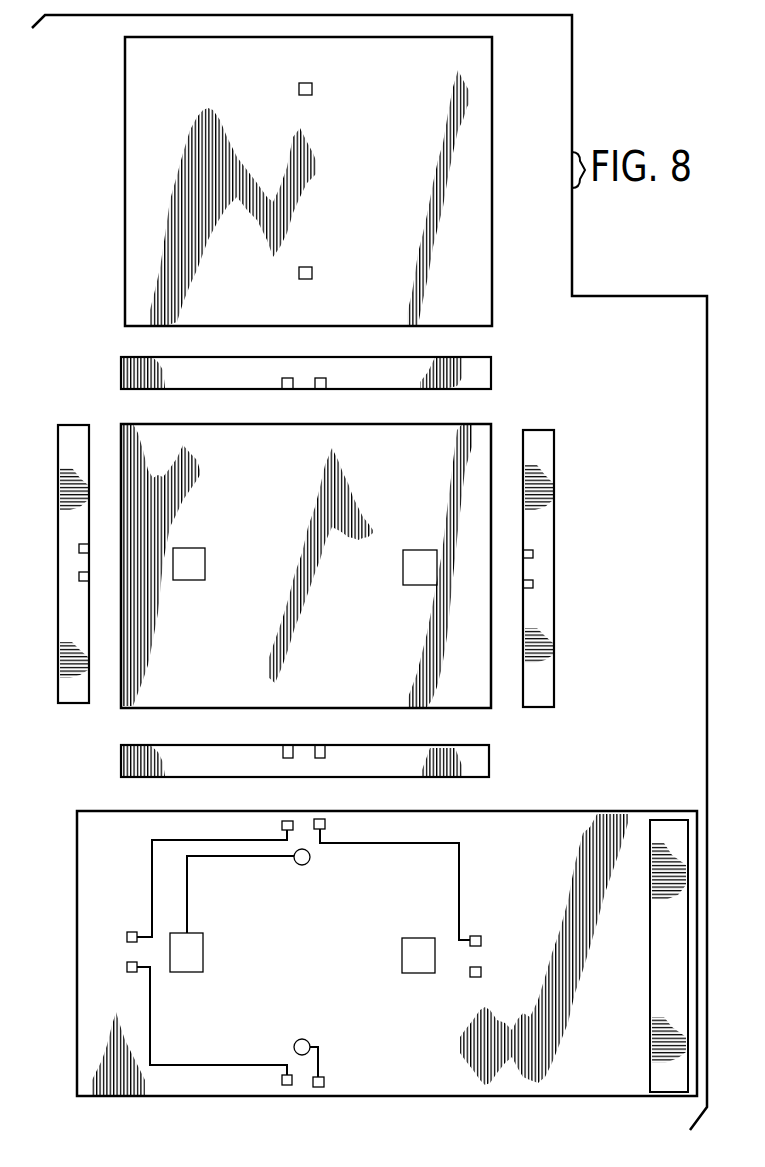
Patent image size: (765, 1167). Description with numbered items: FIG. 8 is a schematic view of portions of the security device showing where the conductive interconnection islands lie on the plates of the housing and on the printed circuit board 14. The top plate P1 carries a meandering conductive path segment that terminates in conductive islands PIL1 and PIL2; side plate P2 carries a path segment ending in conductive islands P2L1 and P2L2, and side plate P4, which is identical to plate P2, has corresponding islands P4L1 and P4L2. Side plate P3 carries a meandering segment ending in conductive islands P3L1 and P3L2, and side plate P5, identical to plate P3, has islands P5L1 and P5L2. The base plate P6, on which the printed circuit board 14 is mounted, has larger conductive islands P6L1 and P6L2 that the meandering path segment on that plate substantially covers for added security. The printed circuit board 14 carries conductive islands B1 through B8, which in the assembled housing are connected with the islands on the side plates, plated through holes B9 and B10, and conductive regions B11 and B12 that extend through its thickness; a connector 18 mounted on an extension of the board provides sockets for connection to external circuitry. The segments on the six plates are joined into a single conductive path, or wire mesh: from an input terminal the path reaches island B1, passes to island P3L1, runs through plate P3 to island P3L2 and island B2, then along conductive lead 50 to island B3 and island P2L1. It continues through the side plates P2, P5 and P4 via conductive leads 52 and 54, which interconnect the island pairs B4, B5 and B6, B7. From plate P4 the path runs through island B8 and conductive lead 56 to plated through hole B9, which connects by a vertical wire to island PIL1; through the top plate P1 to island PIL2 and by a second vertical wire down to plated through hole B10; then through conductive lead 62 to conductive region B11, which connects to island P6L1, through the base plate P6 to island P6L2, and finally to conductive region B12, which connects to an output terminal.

The top plate P1 is at (473, 168).
The conductive island PIL1 is at (313, 89).
The conductive island PIL2 is at (313, 272).
The side plate P2 is at (480, 375).
The conductive island P2L1 is at (321, 389).
The conductive island P2L2 is at (283, 389).
The side plate P3 is at (545, 455).
The conductive island P3L1 is at (535, 583).
The conductive island P3L2 is at (535, 555).
The side plate P4 is at (468, 762).
The conductive island P4L1 is at (283, 748).
The conductive island P4L2 is at (325, 748).
The side plate P5 is at (72, 451).
The conductive island P5L1 is at (78, 548).
The conductive island P5L2 is at (78, 578).
The base plate P6 is at (472, 697).
The conductive island P6L1 is at (195, 571).
The conductive island P6L2 is at (410, 572).
The conductive island B1 is at (482, 972).
The conductive island B2 is at (482, 940).
The conductive island B3 is at (330, 822).
The conductive island B4 is at (282, 825).
The conductive island B5 is at (128, 935).
The conductive island B6 is at (130, 974).
The conductive island B7 is at (280, 1090).
The conductive island B8 is at (328, 1082).
The plated through hole B9 is at (305, 1040).
The plated through hole B10 is at (310, 860).
The conductive region B11 is at (203, 955).
The conductive region B12 is at (407, 958).
The conductive lead 50 is at (461, 890).
The conductive lead 52 is at (166, 840).
The conductive lead 54 is at (152, 1020).
The conductive lead 56 is at (320, 1058).
The conductive lead 62 is at (188, 889).
The printed circuit board 14 is at (503, 1082).
The connector 18 is at (665, 832).